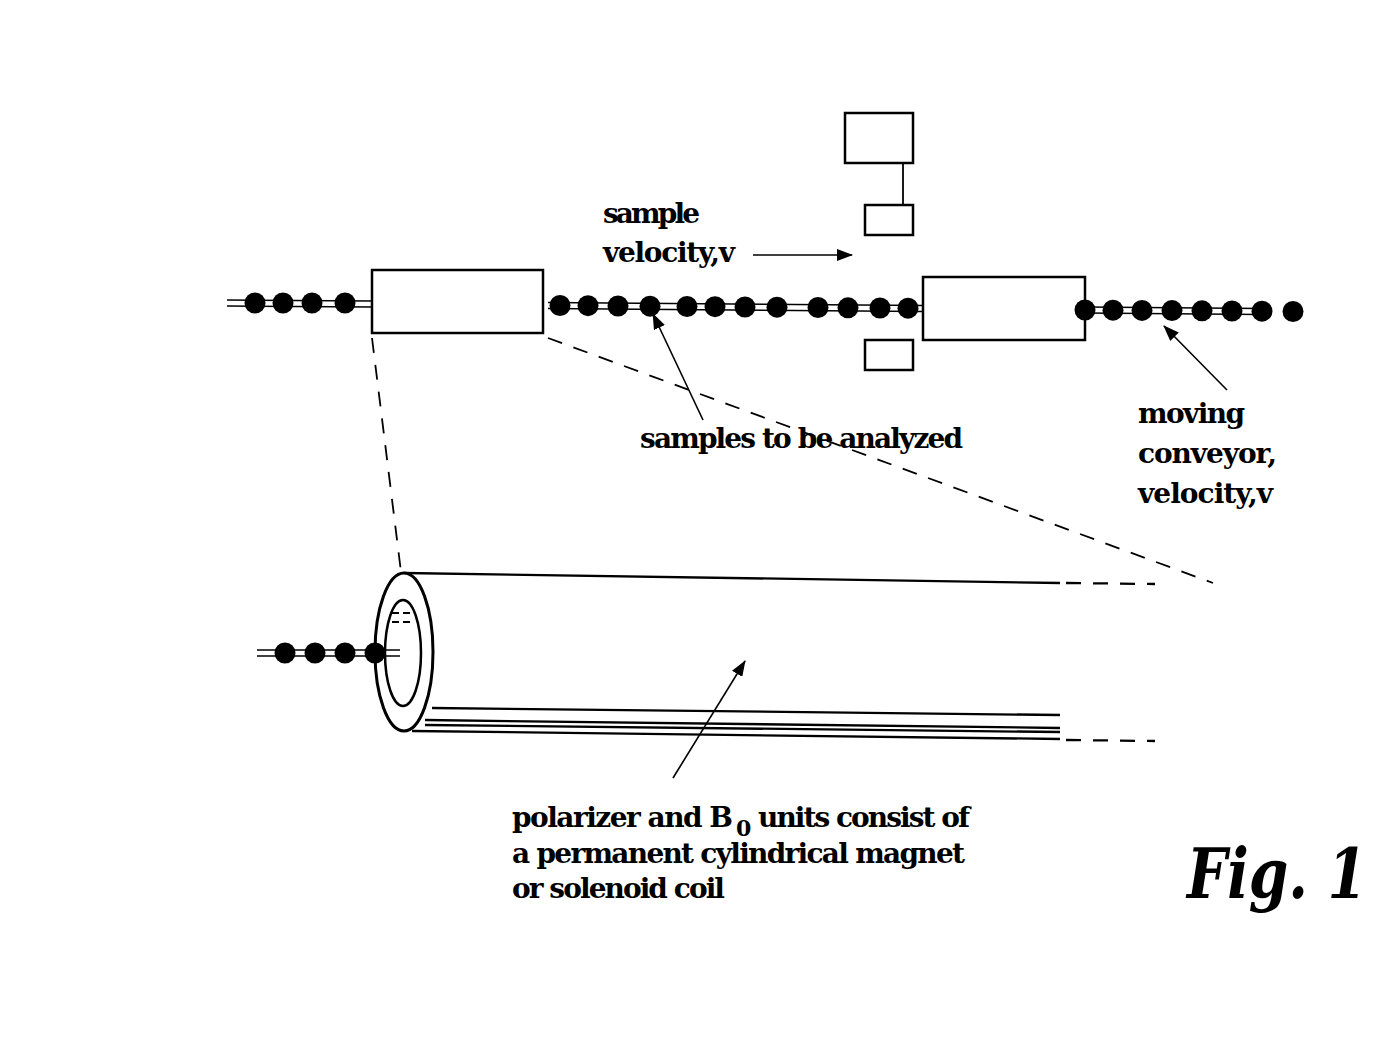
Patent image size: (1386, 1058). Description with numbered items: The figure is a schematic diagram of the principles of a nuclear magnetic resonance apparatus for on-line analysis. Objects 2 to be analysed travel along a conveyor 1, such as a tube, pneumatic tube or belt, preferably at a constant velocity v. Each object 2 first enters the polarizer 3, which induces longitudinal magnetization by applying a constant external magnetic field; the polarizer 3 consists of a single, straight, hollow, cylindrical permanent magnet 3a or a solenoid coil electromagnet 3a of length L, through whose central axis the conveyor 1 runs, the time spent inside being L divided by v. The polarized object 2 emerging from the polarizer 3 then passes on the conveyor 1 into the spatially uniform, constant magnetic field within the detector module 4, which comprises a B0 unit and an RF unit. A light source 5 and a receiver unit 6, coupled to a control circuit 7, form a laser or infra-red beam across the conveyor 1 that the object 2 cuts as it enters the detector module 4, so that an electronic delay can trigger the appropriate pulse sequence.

The conveyor 1 is at (264, 281).
The object 2 is at (308, 291).
The polarizer 3 is at (443, 270).
The cylindrical permanent magnet or solenoid coil electromagnet 3a is at (518, 573).
The detector module 4 is at (1017, 277).
The light source 5 is at (875, 354).
The receiver unit 6 is at (875, 218).
The control circuit 7 is at (860, 133).